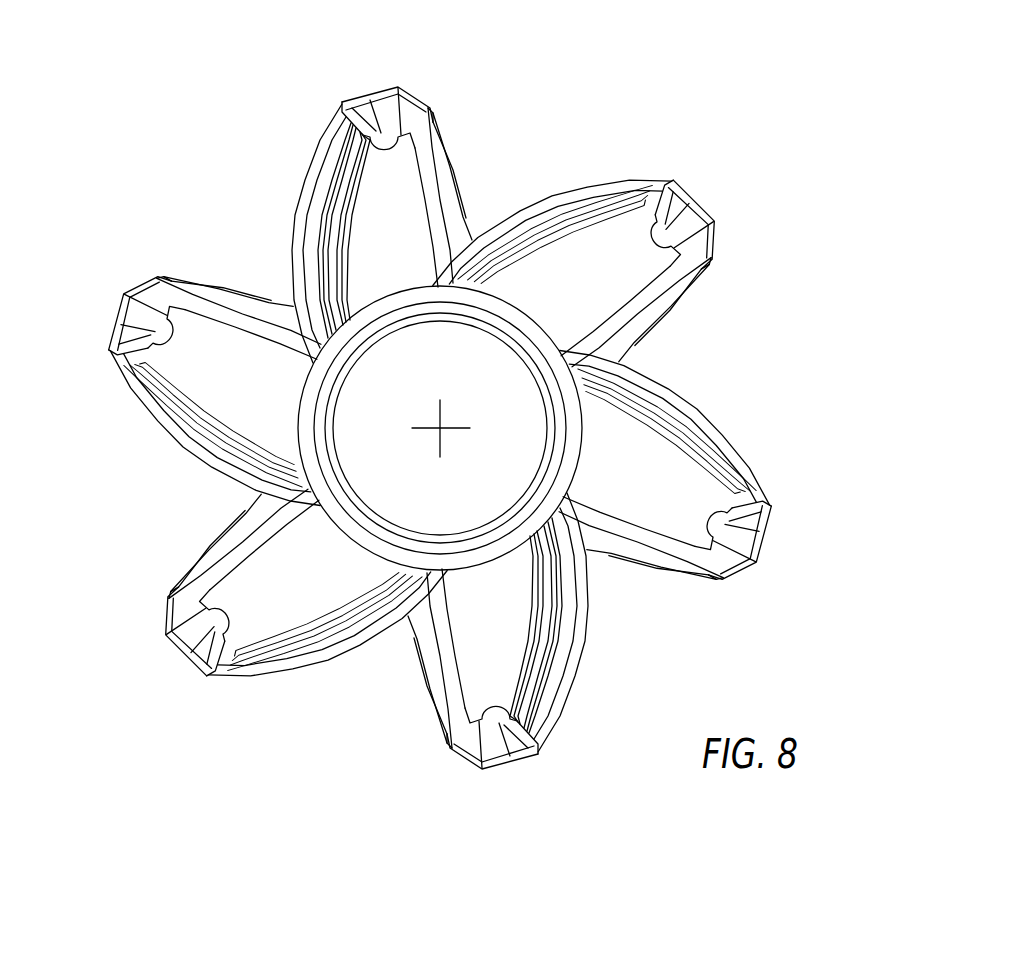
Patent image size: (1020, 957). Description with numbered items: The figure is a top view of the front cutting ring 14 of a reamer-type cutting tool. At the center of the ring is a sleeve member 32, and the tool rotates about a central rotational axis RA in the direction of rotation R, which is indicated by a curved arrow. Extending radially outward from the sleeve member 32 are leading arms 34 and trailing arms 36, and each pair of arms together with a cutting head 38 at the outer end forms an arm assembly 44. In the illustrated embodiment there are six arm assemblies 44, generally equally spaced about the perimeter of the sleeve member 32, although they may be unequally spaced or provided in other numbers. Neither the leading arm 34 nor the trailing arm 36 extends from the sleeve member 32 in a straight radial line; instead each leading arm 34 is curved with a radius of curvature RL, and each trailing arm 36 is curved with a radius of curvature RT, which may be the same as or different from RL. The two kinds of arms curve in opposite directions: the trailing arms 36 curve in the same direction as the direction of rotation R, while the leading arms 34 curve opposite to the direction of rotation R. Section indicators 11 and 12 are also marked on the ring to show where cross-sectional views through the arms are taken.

The front cutting ring 14 is at (200, 136).
The sleeve member 32 is at (357, 478).
The leading arm 34 is at (462, 152).
The trailing arm 36 is at (585, 181).
The cutting head 38 is at (345, 97).
The arm assembly 44 is at (285, 143).
The section line 11 is at (295, 415).
The section line 12 is at (188, 470).
The direction of rotation R is at (305, 40).
The radius of curvature of trailing arm RT is at (380, 83).
The radius of curvature of leading arm RL is at (722, 237).
The rotational axis RA is at (442, 430).